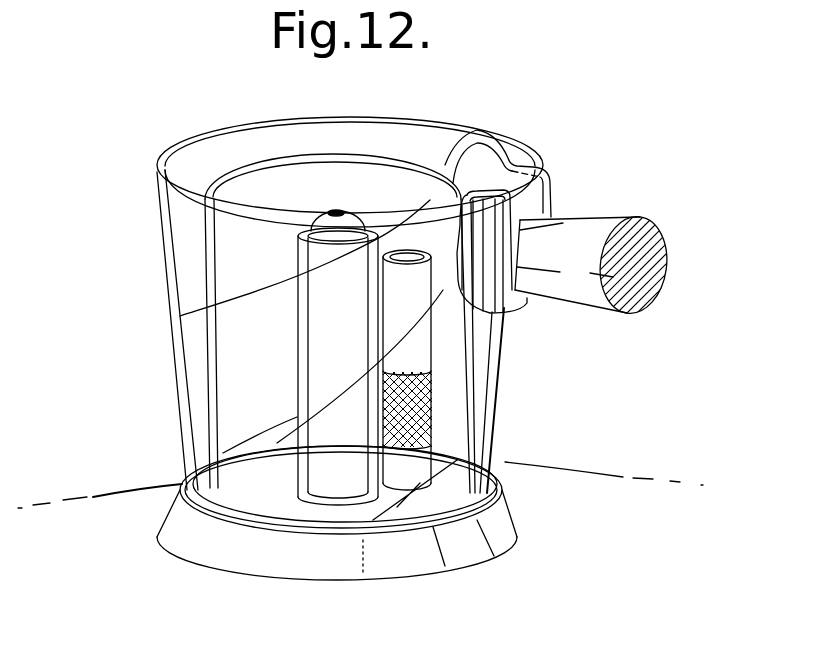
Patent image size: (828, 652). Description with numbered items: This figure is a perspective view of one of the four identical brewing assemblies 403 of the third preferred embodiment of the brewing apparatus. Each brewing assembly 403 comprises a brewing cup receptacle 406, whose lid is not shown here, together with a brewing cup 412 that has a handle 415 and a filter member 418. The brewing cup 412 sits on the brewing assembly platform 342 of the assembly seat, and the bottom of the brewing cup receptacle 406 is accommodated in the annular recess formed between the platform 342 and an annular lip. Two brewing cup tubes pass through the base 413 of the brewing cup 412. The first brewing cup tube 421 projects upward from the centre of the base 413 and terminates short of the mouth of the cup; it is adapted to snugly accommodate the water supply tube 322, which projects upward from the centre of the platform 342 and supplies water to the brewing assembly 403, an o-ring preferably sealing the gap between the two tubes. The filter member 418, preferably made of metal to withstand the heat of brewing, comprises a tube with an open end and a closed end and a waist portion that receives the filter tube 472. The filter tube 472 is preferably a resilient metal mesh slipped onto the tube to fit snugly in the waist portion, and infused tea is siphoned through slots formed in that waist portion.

The water supply tube 322 is at (345, 217).
The brewing assembly platform 342 is at (330, 530).
The brewing assembly 403 is at (162, 453).
The brewing cup receptacle 406 is at (177, 228).
The brewing cup 412 is at (482, 123).
The base 413 is at (270, 500).
The handle 415 is at (598, 240).
The filter member 418 is at (433, 341).
The first brewing cup tube 421 is at (297, 329).
The filter tube 472 is at (432, 401).